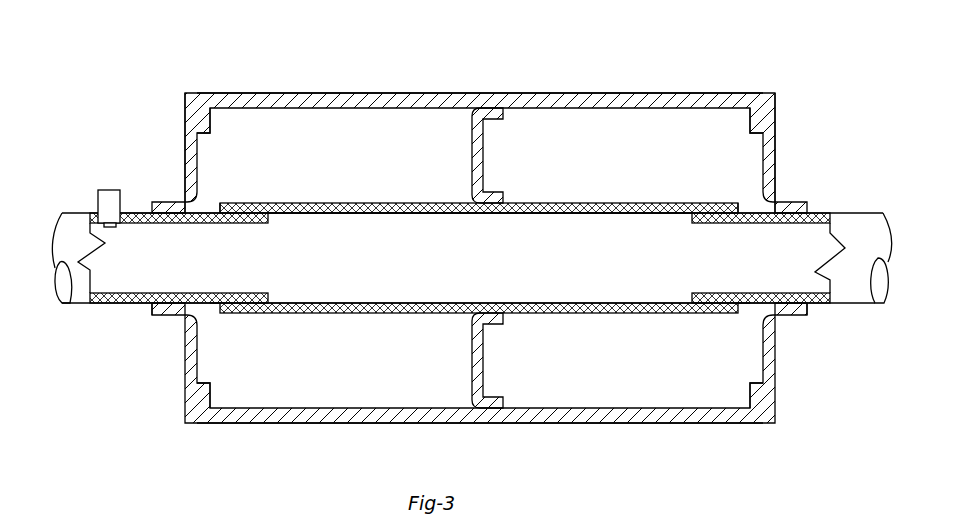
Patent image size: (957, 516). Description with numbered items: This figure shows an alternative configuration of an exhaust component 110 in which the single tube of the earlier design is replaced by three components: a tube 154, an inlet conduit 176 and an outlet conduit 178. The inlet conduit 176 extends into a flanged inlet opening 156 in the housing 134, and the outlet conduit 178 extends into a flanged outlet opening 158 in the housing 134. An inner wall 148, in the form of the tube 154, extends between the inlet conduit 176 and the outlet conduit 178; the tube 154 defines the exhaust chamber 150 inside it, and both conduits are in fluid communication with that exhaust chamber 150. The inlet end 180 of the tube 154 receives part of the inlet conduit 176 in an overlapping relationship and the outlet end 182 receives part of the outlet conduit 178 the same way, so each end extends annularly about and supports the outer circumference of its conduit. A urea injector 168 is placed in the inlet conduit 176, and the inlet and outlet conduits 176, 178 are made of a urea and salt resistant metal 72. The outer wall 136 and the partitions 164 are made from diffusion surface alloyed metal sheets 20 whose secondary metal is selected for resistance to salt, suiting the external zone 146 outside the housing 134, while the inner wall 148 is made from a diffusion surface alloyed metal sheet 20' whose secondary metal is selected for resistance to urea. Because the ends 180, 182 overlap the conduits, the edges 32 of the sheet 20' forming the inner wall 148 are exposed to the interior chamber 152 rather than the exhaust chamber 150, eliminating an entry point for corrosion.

The exhaust component 110 is at (168, 95).
The outer wall 136 is at (305, 91).
The diffusion surface alloyed metal sheet 20 is at (480, 260).
The housing 134 is at (779, 107).
The inlet conduit 176 is at (72, 220).
The urea injector 168 is at (111, 200).
The inlet end 180 is at (227, 202).
The inner wall 148 is at (342, 202).
The partitions 164 is at (489, 150).
The outlet end 182 is at (712, 202).
The urea and salt resistant metal 72 is at (105, 296).
The outlet conduit 178 is at (862, 222).
The exhaust chamber 150 is at (495, 265).
The diffusion surface alloyed metal sheet 20' is at (480, 243).
The flanged inlet opening 156 is at (165, 308).
The edges 32 is at (222, 308).
The interior chamber 152 is at (328, 393).
The tube 154 is at (313, 315).
The external zone 146 is at (294, 460).
The flanged outlet opening 158 is at (800, 310).